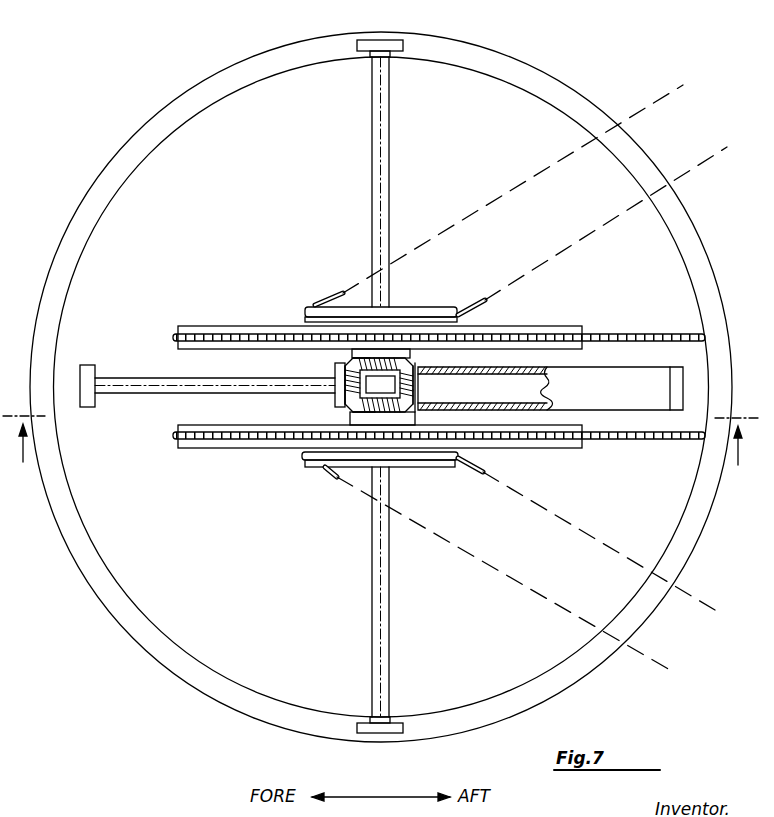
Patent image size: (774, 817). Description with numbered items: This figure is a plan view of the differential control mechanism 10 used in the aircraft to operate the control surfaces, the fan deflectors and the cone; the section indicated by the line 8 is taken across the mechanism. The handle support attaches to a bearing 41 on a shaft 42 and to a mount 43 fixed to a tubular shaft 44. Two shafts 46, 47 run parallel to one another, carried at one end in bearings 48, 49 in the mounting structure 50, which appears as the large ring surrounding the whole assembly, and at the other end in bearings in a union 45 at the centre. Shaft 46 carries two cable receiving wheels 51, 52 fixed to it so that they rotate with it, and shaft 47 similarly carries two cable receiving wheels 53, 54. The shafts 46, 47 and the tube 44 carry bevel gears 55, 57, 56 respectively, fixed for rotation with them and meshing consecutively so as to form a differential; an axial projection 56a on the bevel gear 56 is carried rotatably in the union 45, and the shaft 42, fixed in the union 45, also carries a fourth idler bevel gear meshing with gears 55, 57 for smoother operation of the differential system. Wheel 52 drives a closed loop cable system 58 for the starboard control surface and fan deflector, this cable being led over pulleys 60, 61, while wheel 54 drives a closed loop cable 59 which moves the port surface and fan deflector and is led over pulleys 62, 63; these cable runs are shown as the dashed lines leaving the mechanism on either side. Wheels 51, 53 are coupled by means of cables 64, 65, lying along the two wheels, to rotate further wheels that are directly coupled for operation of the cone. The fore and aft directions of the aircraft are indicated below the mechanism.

The section line 8- 8 is at (381, 452).
The control mechanism 10 is at (150, 683).
The bearing 41 is at (88, 408).
The shaft 42 is at (150, 395).
The mount 43 is at (678, 400).
The tubular shaft 44 is at (655, 402).
The union 45 is at (386, 378).
The shaft 46 is at (389, 190).
The shaft 47 is at (389, 556).
The bearing 48 is at (395, 725).
The bearing 49 is at (393, 43).
The mounting structure 50 is at (693, 241).
The cable receiving wheel 51 is at (575, 338).
The cable receiving wheel 52 is at (426, 308).
The cable receiving wheel 53 is at (556, 446).
The cable receiving wheel 54 is at (437, 462).
The bevel gear 55 is at (364, 360).
The bevel gear 56 is at (410, 376).
The axial projection 56a is at (410, 397).
The bevel gear 57 is at (352, 404).
The closed loop cable system 58 is at (646, 107).
The closed loop cable 59 is at (582, 532).
The pulley 60 is at (330, 298).
The pulley 61 is at (478, 309).
The pulley 62 is at (327, 471).
The pulley 63 is at (478, 462).
The cable 64 is at (690, 440).
The cable 65 is at (677, 336).